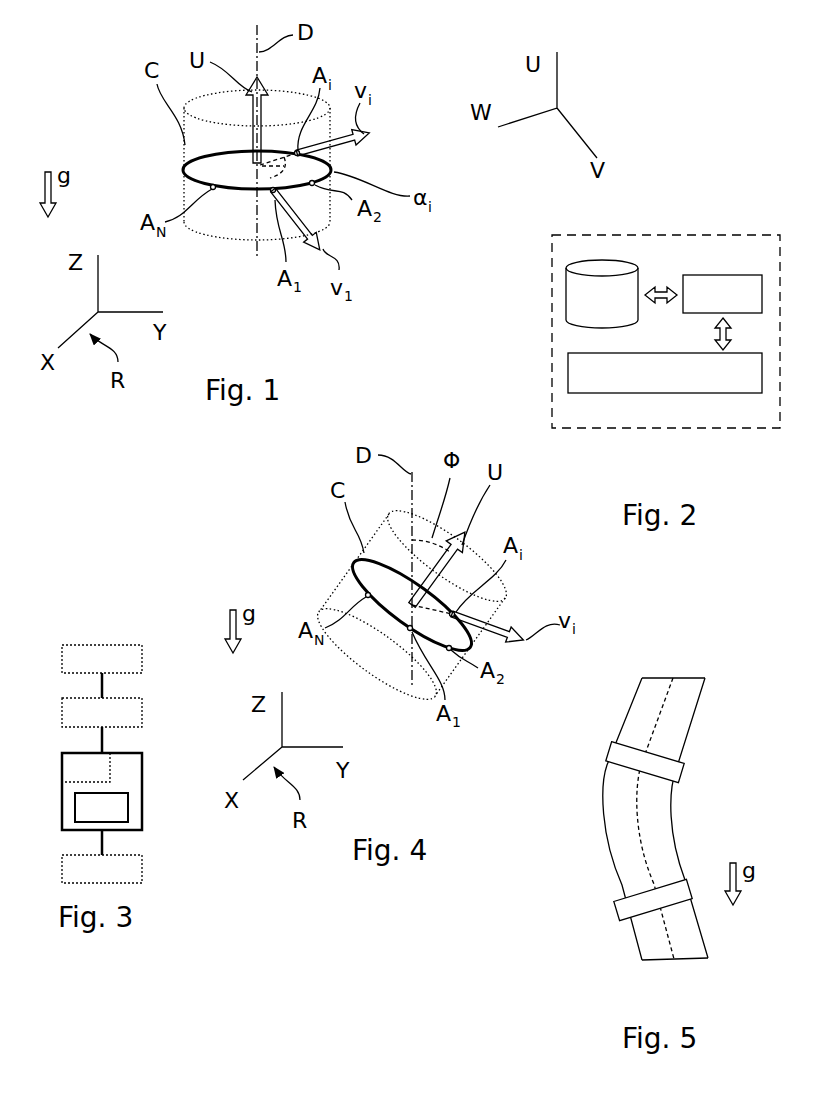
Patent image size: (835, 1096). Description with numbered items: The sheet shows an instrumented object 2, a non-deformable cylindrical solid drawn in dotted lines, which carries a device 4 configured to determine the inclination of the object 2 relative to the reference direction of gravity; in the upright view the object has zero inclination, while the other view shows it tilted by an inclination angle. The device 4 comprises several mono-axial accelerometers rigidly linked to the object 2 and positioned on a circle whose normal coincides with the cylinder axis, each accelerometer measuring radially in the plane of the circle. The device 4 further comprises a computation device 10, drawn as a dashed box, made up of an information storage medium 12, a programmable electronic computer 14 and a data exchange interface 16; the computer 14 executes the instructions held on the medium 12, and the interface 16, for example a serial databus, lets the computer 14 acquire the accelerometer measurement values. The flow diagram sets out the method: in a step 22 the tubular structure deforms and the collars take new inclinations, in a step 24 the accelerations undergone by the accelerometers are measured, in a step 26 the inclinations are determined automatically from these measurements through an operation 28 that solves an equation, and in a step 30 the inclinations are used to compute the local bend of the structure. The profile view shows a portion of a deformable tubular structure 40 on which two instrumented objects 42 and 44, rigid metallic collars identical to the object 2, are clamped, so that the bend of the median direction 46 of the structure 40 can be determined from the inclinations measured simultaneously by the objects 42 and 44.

In FIG. 1, the instrumented object 2 is at (197, 214).
In FIG. 4, the instrumented object 2 is at (400, 668).
In FIG. 1, the device 4 is at (172, 170).
In FIG. 4, the device 4 is at (350, 566).
In FIG. 2, the computation device 10 is at (644, 434).
In FIG. 2, the information storage medium 12 is at (615, 316).
In FIG. 2, the programmable electronic computer 14 is at (736, 312).
In FIG. 2, the data exchange interface 16 is at (681, 390).
In FIG. 3, the deformation step 22 is at (115, 672).
In FIG. 3, the measurement step 24 is at (115, 725).
In FIG. 3, the inclination determination step 26 is at (99, 781).
In FIG. 3, the equation-solving operation 28 is at (115, 820).
In FIG. 3, the bend computation step 30 is at (115, 882).
In FIG. 5, the deformable tubular structure 40 is at (672, 816).
In FIG. 5, the instrumented object 42 is at (607, 756).
In FIG. 5, the instrumented object 44 is at (620, 915).
In FIG. 5, the median direction 46 is at (660, 722).